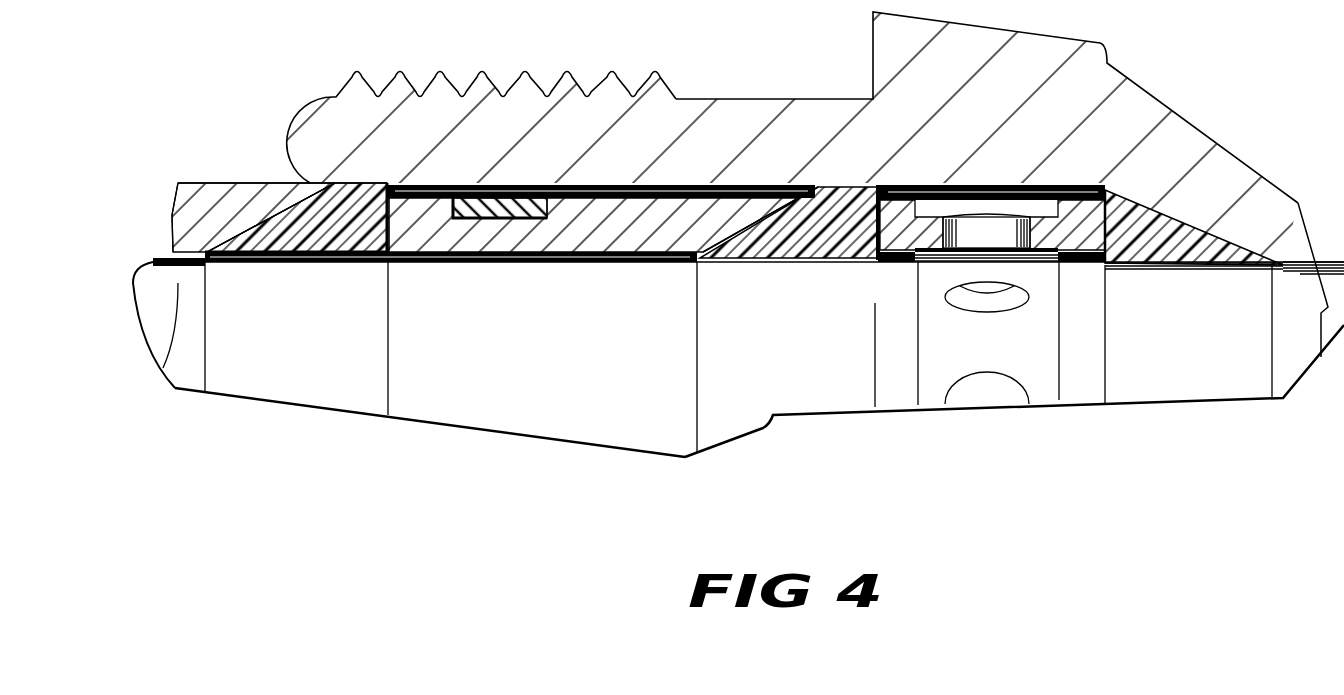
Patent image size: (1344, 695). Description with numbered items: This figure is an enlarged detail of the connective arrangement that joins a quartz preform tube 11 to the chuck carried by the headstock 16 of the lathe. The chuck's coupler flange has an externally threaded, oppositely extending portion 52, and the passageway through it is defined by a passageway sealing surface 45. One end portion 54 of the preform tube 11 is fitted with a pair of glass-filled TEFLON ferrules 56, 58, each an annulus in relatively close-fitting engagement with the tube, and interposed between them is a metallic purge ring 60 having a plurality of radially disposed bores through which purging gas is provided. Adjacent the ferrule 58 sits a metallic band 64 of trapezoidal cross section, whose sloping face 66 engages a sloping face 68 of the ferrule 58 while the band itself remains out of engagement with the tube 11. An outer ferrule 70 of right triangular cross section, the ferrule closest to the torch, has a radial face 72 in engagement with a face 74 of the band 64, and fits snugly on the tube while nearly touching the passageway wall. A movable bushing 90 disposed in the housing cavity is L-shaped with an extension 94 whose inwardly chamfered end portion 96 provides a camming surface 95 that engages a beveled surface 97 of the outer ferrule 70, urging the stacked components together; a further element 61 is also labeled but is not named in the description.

The quartz preform tube 11 is at (302, 405).
The headstock 16 is at (870, 64).
The passageway sealing surface 45 is at (640, 206).
The oppositely extending portion 52 is at (314, 118).
The end portion 54 is at (542, 432).
The ferrule 56 is at (1175, 224).
The ferrule 58 is at (868, 182).
The purge ring 60 is at (1078, 212).
The retainer shoulder 61 is at (1153, 213).
The metallic band 64 is at (585, 191).
The sloping face 66 is at (770, 219).
The sloping face 68 is at (748, 226).
The outer ferrule 70 is at (374, 181).
The radial face 72 is at (393, 222).
The face 74 is at (387, 212).
The movable bushing 90 is at (217, 180).
The extension 94 is at (173, 222).
The camming surface 95 is at (292, 219).
The inwardly chamfered end portion 96 is at (277, 207).
The beveled surface 97 is at (247, 232).